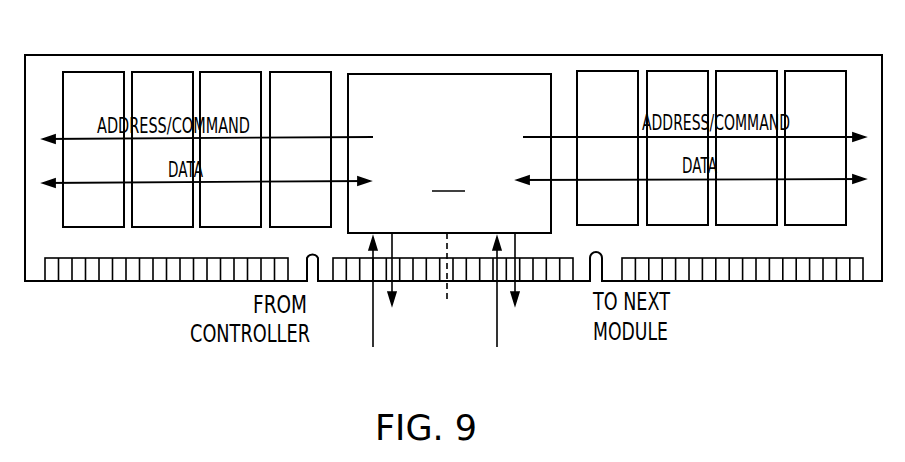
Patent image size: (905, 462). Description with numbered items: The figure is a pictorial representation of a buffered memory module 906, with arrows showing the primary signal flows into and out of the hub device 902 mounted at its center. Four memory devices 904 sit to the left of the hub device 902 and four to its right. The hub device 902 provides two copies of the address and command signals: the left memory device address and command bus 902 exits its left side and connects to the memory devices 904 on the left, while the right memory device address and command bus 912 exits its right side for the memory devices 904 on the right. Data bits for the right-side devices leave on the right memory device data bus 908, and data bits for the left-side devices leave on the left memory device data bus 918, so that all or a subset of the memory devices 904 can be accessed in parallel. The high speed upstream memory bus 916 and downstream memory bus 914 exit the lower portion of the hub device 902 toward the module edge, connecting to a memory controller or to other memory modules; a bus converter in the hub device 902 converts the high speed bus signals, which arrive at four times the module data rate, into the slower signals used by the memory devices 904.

The hub device 902 is at (338, 137).
The memory devices 904 is at (830, 218).
The buffered memory module 906 is at (408, 55).
The right memory device data bus 908 is at (847, 181).
The right memory device address and command bus 912 is at (565, 137).
The downstream memory bus 914 is at (373, 347).
The upstream memory bus 916 is at (393, 304).
The left memory device data bus 918 is at (73, 183).